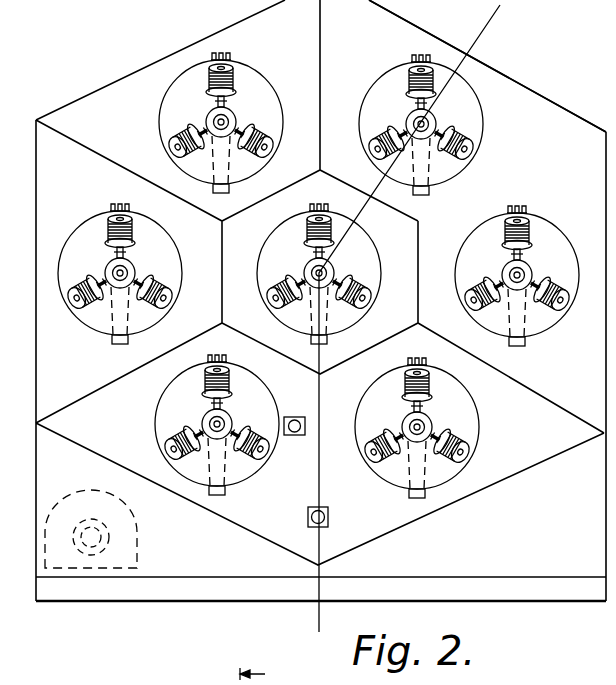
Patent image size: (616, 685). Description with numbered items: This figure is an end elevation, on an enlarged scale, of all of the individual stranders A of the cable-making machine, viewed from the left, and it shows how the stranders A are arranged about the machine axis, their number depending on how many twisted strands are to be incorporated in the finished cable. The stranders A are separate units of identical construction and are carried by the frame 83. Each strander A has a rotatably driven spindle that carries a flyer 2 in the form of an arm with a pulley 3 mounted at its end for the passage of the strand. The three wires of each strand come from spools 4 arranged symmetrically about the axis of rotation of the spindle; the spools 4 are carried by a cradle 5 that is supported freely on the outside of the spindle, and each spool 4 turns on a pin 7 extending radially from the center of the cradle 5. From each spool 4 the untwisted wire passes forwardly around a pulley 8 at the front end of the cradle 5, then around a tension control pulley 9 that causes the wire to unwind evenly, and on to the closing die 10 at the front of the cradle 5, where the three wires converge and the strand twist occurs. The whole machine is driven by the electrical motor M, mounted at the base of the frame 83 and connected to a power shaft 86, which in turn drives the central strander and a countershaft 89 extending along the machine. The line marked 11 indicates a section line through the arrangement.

The flyer 2 is at (233, 53).
The pulley 3 is at (219, 51).
The spool 4 is at (260, 132).
The cradle 5 is at (205, 115).
The pin 7 is at (318, 218).
The pulley 8 is at (310, 248).
The closing die 10 is at (310, 272).
The section line 11 is at (515, 34).
The frame 83 is at (528, 97).
The power shaft 86 is at (305, 427).
The countershaft 89 is at (328, 518).
The tension control pulley 9 is at (252, 665).
The electrical motor M is at (68, 503).
The strander A is at (160, 127).